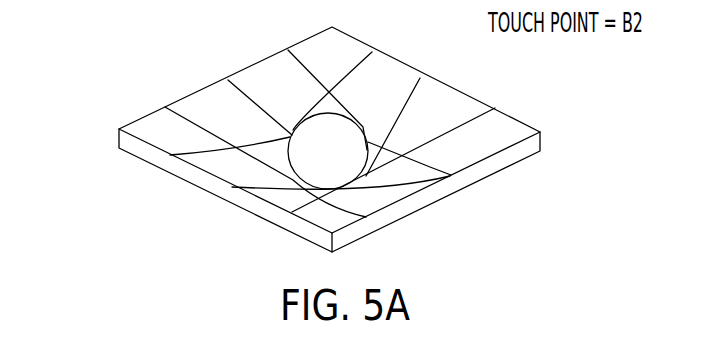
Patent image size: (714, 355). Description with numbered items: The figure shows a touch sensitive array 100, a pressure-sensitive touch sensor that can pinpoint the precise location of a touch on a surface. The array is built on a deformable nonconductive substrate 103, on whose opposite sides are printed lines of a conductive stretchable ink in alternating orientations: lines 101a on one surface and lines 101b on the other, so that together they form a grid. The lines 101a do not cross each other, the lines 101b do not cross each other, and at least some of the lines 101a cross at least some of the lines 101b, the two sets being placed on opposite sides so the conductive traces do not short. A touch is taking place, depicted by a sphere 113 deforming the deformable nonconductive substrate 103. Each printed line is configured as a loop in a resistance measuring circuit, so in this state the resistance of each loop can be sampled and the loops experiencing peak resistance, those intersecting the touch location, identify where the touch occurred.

The touch sensitive array 100 is at (104, 69).
The lines on surface A 101a is at (497, 183).
The lines on surface B 101b is at (519, 103).
The deformable nonconductive substrate 103 is at (528, 146).
The sphere 113 is at (316, 113).